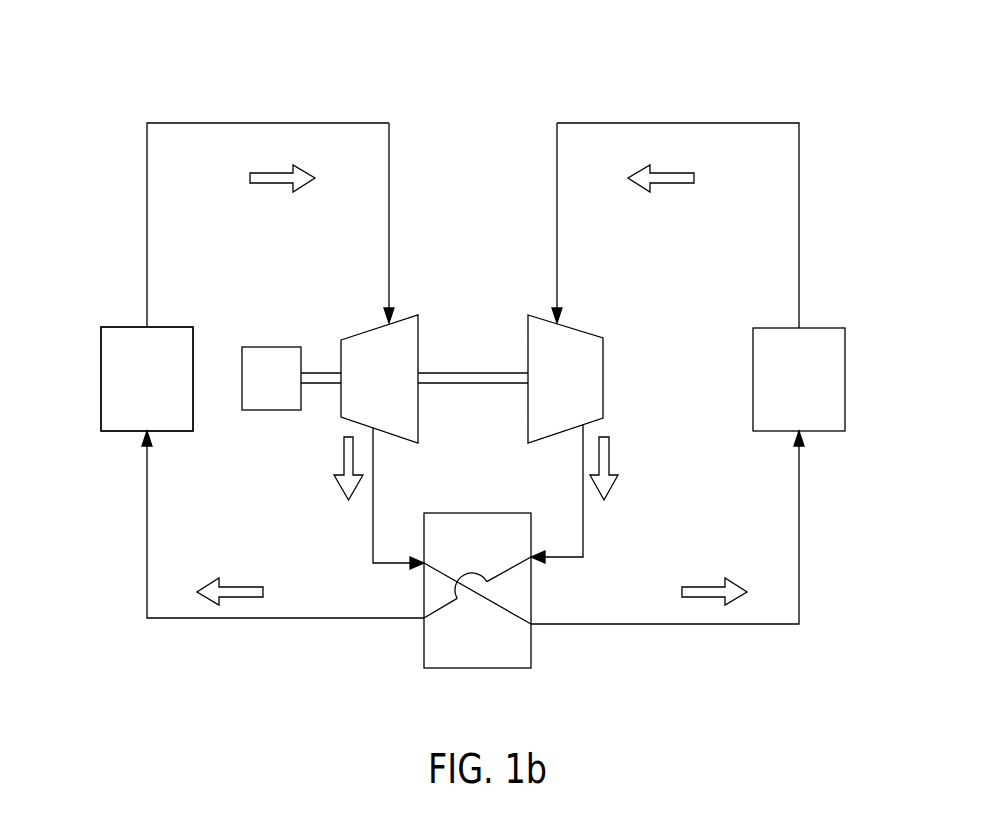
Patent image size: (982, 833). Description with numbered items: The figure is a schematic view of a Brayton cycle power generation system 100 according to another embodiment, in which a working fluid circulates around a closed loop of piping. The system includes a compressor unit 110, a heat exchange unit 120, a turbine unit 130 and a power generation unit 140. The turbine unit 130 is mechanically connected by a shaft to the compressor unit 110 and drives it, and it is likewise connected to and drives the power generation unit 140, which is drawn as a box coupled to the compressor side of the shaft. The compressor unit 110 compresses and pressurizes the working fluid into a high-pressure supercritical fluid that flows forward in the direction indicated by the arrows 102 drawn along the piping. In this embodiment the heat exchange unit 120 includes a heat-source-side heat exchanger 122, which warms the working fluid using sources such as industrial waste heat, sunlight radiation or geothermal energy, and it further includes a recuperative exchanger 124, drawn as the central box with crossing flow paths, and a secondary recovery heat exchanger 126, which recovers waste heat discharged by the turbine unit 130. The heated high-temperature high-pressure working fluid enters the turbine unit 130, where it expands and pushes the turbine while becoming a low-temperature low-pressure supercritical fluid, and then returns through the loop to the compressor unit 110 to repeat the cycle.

The Brayton cycle power generation system 100 is at (135, 98).
The arrow 102 is at (272, 190).
The compressor unit 110 is at (582, 345).
The heat exchange unit 120 is at (115, 366).
The heat-source-side heat exchanger 122 is at (125, 397).
The recuperative exchanger 124 is at (500, 648).
The secondary recovery heat exchanger 126 is at (768, 345).
The turbine unit 130 is at (366, 337).
The power generation unit 140 is at (265, 355).